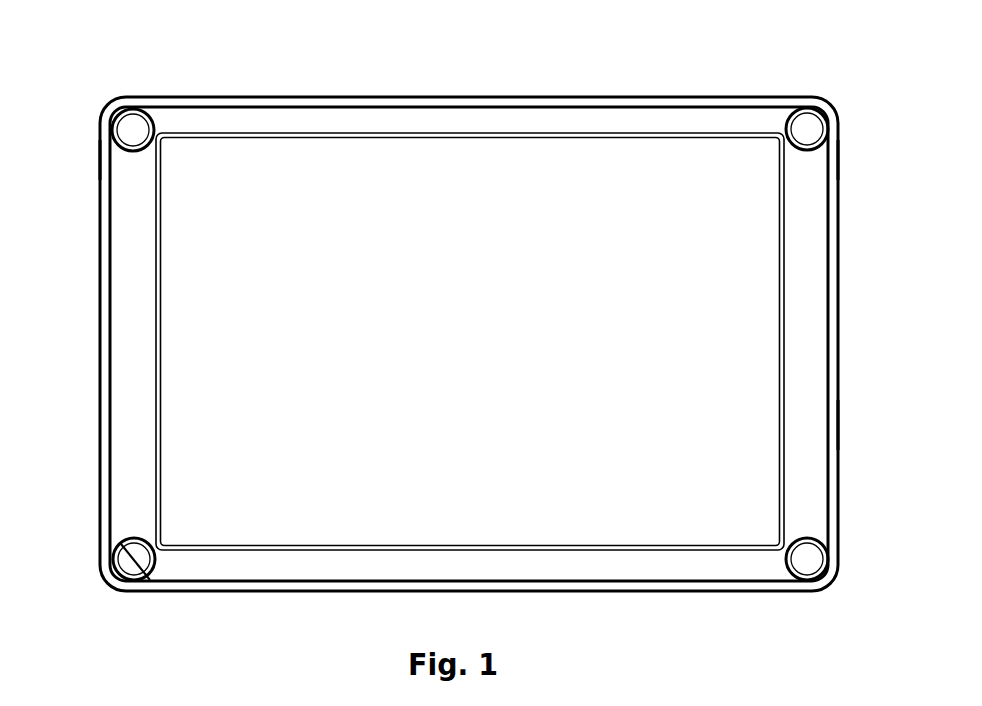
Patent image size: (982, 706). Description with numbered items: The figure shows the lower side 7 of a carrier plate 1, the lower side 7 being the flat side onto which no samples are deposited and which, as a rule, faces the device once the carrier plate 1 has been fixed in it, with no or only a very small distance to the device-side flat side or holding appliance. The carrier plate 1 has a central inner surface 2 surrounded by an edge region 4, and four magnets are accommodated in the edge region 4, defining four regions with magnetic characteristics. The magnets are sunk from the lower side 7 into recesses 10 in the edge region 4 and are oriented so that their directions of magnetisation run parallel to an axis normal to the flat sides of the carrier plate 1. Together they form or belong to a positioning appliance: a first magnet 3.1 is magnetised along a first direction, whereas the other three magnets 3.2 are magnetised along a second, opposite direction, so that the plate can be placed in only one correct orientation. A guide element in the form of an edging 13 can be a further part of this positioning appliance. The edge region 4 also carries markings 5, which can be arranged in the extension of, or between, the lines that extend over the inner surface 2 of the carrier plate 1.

The carrier plate 1 is at (469, 295).
The inner surface 2 is at (710, 295).
The first magnet 3.1 is at (102, 595).
The other three magnets 3.2 is at (808, 568).
The edge region 4 is at (502, 344).
The markings 5 is at (398, 365).
The lower side 7 is at (405, 163).
The recesses 10 is at (463, 179).
The edging 13 is at (838, 423).